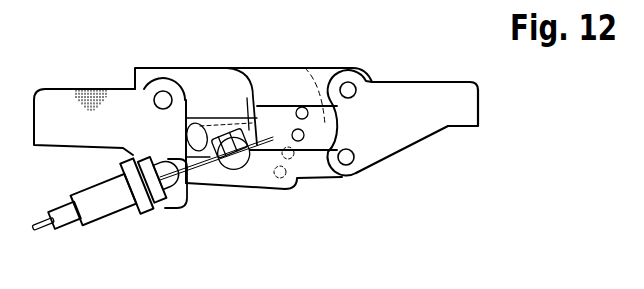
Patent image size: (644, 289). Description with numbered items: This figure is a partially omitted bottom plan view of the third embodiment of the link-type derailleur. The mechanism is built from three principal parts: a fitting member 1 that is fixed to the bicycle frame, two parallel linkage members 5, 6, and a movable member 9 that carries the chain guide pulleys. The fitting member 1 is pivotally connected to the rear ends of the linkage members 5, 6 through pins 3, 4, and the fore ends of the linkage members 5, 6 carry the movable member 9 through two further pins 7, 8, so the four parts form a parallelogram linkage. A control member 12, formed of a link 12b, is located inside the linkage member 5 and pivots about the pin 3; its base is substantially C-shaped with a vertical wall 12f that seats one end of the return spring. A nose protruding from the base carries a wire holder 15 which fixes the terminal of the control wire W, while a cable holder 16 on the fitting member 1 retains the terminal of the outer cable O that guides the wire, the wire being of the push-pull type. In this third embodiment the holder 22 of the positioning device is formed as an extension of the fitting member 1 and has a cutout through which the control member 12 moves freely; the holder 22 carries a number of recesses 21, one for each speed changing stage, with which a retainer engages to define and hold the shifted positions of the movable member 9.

The fitting member 1 is at (68, 86).
The pin 3 is at (162, 98).
The pin 4 is at (182, 202).
The linkage member 5 is at (278, 73).
The linkage member 6 is at (323, 173).
The pin 7 is at (353, 88).
The pin 8 is at (351, 163).
The movable member 9 is at (460, 97).
The control member 12 is at (215, 76).
The link 12b is at (247, 93).
The vertical wall 12f is at (183, 67).
The wire holder 15 is at (230, 172).
The cable holder 16 is at (147, 210).
The recesses 21 is at (301, 141).
The holder 22 is at (278, 190).
The outer cable O is at (72, 217).
The control wire W is at (43, 232).